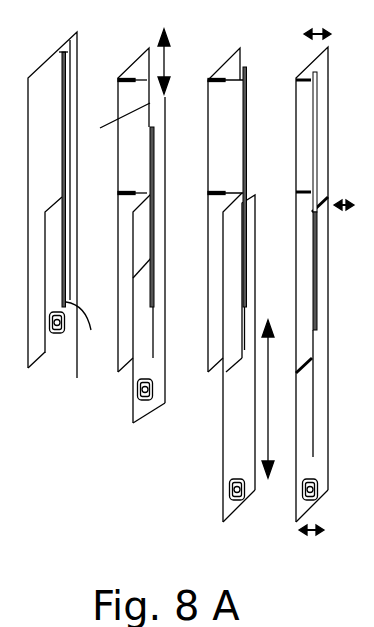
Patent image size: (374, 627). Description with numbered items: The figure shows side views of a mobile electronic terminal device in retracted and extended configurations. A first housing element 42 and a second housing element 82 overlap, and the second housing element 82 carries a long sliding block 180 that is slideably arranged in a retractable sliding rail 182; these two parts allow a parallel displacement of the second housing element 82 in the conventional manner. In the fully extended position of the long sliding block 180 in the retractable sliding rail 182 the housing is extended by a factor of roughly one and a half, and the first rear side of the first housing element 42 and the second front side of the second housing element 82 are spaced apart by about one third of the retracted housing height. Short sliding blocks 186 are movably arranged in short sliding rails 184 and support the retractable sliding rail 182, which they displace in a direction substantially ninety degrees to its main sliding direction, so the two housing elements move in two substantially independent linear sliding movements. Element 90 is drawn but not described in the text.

The first housing element 42 is at (52, 205).
The second housing element 82 is at (42, 392).
The rail 90 is at (68, 304).
The long sliding block 180 is at (79, 46).
The retractable sliding rail 182 is at (165, 98).
The short sliding rails 184 is at (207, 74).
The short sliding blocks 186 is at (232, 80).